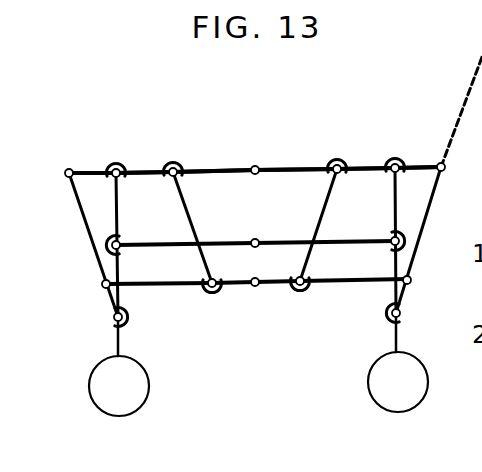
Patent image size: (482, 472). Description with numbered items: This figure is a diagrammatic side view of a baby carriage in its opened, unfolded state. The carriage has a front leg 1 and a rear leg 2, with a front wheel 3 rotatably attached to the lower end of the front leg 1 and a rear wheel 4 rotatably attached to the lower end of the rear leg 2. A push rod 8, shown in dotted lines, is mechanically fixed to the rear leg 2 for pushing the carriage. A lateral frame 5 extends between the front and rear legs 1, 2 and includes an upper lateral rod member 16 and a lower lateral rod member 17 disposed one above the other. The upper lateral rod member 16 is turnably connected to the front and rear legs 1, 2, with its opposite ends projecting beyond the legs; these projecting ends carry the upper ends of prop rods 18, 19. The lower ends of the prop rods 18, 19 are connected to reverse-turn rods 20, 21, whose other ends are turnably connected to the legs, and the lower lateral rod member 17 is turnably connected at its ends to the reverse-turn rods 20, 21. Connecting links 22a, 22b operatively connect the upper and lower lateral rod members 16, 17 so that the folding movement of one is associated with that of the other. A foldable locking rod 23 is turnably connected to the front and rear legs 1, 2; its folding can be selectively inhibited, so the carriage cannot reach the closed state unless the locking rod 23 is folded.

The front leg 1 is at (118, 347).
The rear leg 2 is at (396, 335).
The front wheel 3 is at (149, 402).
The rear wheel 4 is at (368, 373).
The lateral frame 5 is at (296, 163).
The push rod 8 is at (472, 70).
The upper lateral rod member 16 is at (223, 168).
The lower lateral rod member 17 is at (172, 288).
The prop rod 18 is at (83, 217).
The prop rod 19 is at (430, 210).
The reverse-turn rod 20 is at (107, 296).
The reverse-turn rod 21 is at (405, 295).
The connecting link 22a is at (187, 198).
The connecting link 22b is at (323, 210).
The foldable locking rod 23 is at (338, 244).